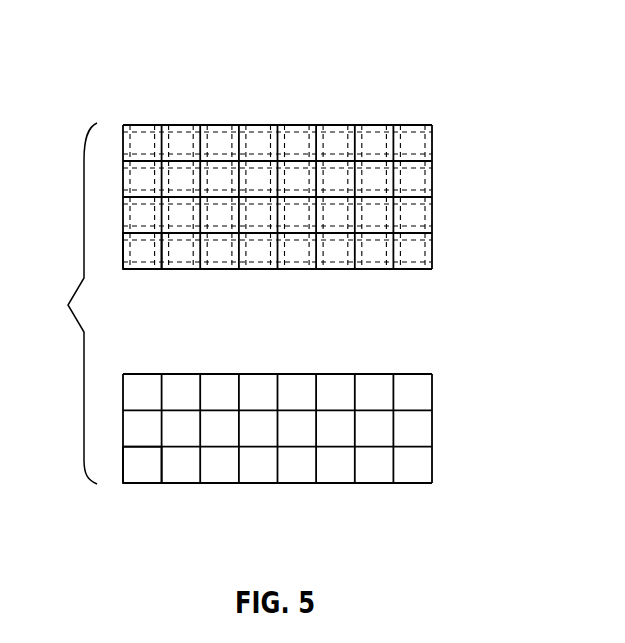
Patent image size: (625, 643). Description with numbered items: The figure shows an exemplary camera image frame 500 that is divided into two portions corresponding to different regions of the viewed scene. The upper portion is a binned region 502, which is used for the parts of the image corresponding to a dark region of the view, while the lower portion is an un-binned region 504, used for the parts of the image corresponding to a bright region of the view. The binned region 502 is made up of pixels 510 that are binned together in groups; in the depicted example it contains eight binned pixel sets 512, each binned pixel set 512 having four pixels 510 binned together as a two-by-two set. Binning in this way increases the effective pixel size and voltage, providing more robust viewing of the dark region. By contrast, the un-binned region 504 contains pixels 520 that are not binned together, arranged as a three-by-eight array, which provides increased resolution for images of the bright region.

The camera image frame 500 is at (58, 303).
The binned region 502 is at (340, 168).
The un-binned region 504 is at (340, 421).
The pixel 510 is at (141, 252).
The binned pixel set 512 is at (161, 162).
The pixel 520 is at (140, 472).